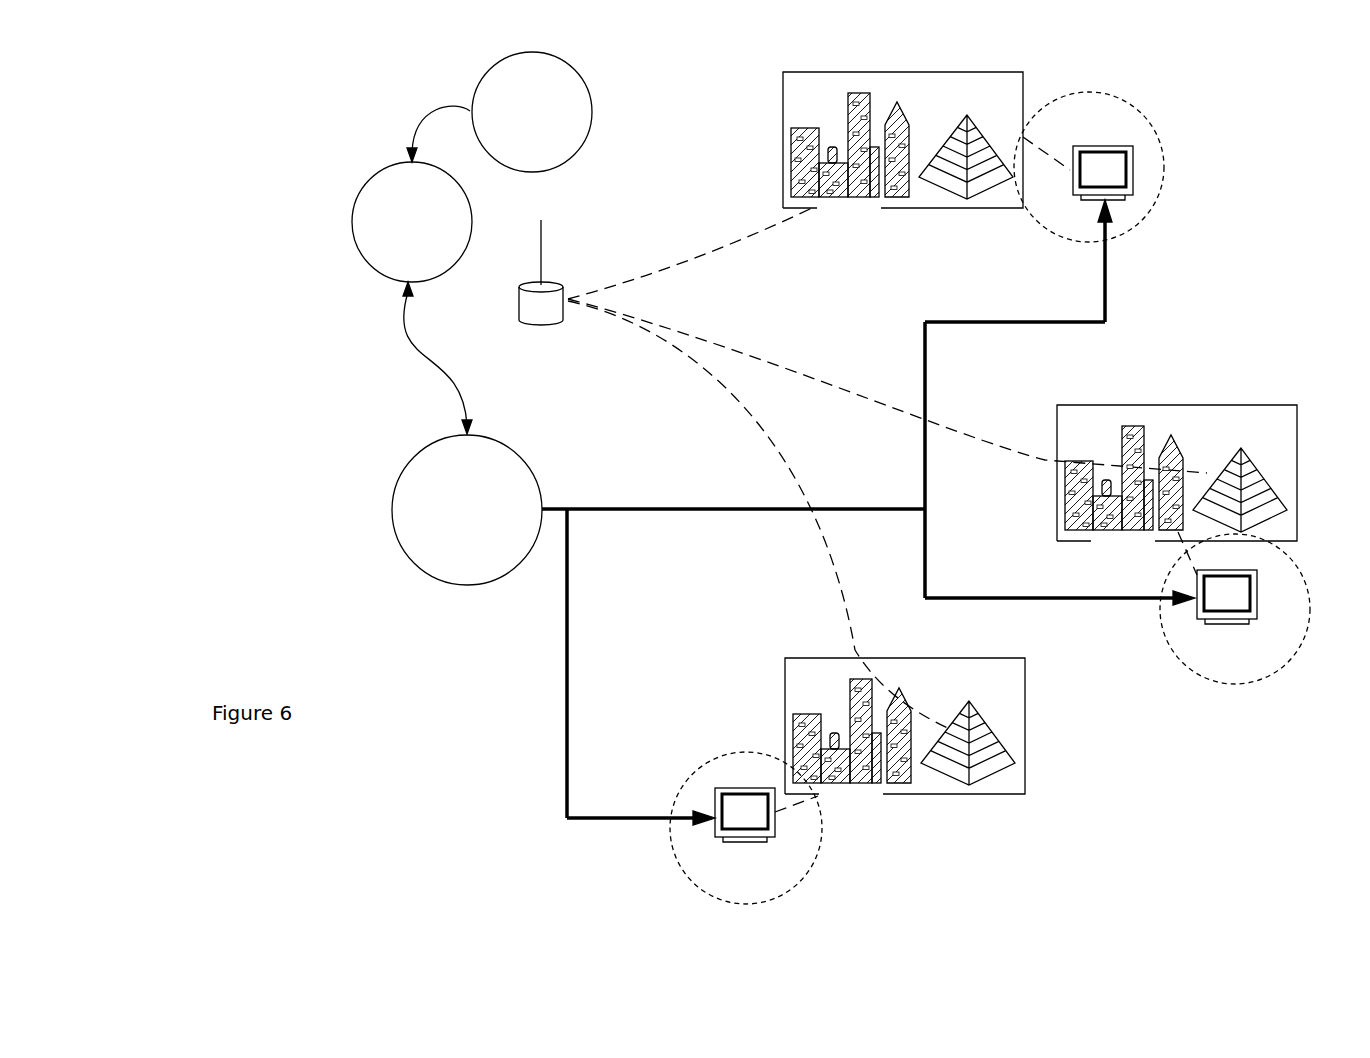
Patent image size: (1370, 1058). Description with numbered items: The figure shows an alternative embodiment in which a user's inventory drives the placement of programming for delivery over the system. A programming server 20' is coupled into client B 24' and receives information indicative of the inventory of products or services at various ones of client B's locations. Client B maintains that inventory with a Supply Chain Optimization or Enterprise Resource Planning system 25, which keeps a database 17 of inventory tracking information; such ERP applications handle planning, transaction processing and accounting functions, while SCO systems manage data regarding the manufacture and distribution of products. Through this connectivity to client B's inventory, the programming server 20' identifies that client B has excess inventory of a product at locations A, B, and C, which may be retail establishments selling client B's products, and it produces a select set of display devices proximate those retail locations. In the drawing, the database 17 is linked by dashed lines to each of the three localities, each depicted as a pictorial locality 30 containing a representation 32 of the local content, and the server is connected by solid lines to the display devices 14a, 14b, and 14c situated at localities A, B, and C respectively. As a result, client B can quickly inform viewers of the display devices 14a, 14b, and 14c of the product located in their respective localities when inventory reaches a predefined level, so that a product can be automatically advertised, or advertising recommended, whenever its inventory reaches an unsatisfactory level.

The SCO/ERP system 25 is at (592, 118).
The client B 24' is at (392, 210).
The database 17 is at (545, 326).
The programming server 20' is at (421, 510).
The locality 30 is at (1023, 92).
The pyramid / locality content 32 is at (950, 197).
The display device 14a is at (1135, 172).
The display device 14b is at (1258, 597).
The display device 14c is at (745, 788).